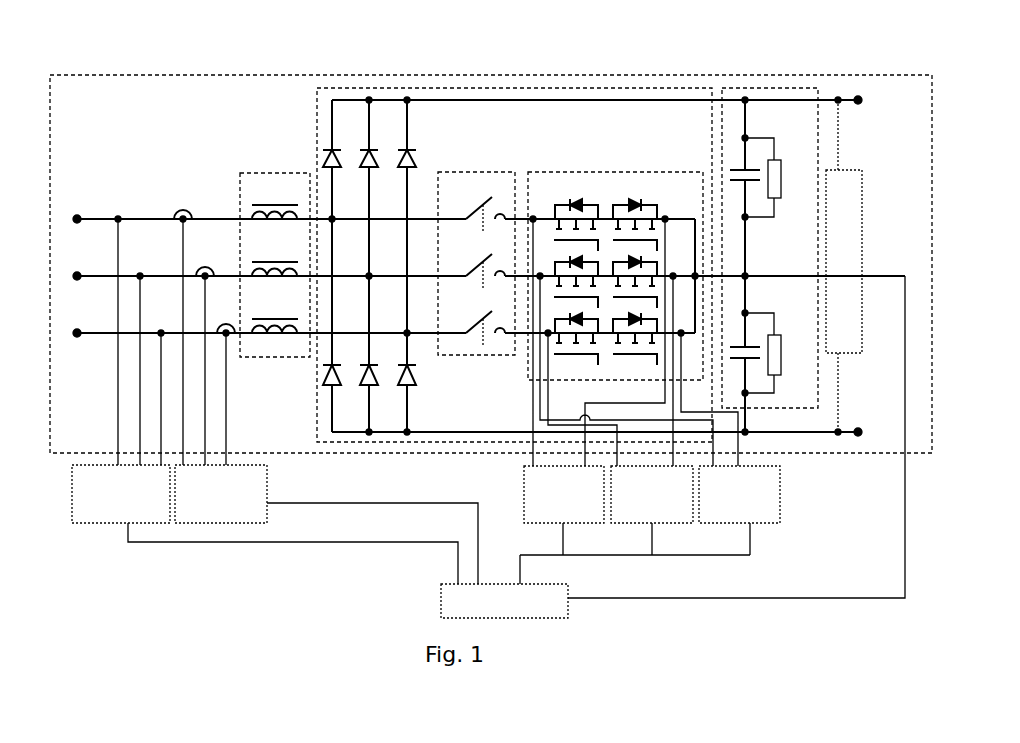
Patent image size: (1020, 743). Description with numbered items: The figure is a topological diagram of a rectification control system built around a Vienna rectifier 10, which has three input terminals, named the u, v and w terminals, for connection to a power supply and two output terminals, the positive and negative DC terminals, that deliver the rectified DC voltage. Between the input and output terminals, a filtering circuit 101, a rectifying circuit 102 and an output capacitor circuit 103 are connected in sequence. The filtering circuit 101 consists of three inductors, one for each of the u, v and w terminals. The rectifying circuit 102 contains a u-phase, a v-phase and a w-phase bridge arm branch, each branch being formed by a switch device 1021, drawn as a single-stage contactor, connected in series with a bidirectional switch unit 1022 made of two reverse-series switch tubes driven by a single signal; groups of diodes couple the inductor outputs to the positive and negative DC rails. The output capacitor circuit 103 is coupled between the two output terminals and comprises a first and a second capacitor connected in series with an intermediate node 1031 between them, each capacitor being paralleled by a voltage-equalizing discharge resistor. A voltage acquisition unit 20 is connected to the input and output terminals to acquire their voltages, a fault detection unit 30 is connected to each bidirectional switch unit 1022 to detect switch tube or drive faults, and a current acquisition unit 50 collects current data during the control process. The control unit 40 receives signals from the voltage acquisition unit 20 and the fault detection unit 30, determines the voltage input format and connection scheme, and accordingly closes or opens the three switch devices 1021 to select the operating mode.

The Vienna rectifier 10 is at (355, 75).
The filtering circuit 101 is at (262, 172).
The rectifying circuit 102 is at (570, 87).
The output capacitor circuit 103 is at (760, 87).
The switch device 1021 is at (480, 172).
The bidirectional switch unit 1022 is at (636, 162).
The intermediate node 1031 is at (752, 268).
The voltage acquisition unit 20 is at (865, 262).
The fault detection unit 30 is at (524, 482).
The control unit 40 is at (441, 608).
The current acquisition unit 50 is at (267, 493).